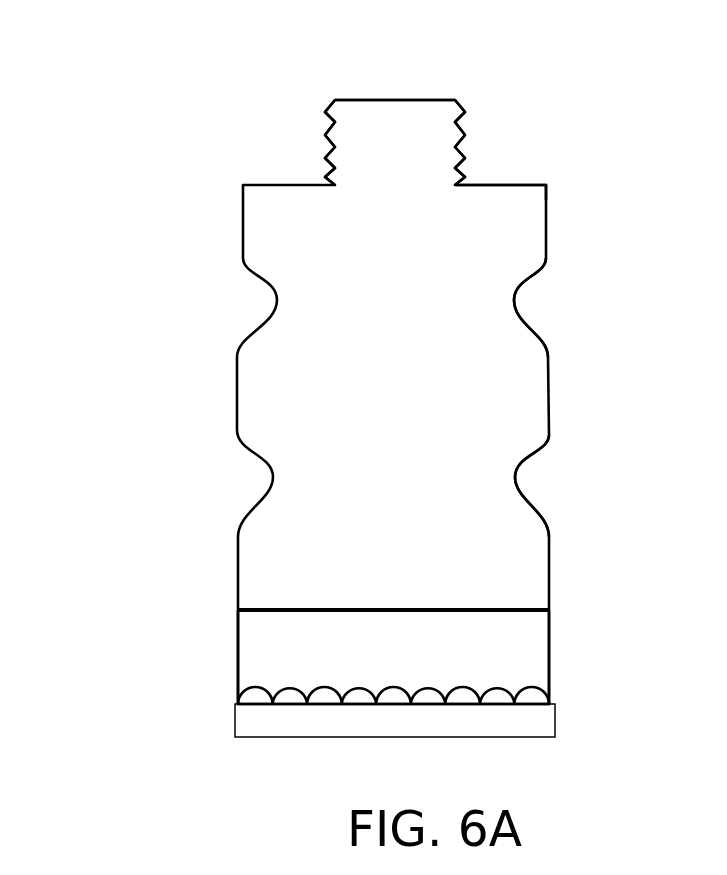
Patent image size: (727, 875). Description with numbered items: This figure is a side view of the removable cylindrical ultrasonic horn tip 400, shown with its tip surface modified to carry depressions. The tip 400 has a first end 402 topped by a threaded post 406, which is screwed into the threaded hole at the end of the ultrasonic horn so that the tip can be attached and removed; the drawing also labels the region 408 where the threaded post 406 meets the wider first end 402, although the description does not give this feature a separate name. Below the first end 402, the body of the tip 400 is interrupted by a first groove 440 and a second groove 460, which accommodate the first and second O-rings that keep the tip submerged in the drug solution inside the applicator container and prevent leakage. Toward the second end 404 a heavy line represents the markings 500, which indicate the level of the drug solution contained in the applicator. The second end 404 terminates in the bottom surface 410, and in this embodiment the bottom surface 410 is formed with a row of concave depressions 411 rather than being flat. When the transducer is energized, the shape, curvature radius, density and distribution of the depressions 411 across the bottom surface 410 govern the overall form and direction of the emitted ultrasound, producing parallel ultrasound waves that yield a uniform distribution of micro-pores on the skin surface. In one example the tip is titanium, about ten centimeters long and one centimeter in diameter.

The cylindrical tip 400 is at (351, 403).
The first end 402 is at (258, 220).
The second end 404 is at (252, 662).
The threaded post 406 is at (465, 135).
The shoulder 408 is at (548, 187).
The bottom surface 410 is at (275, 698).
The concave depressions 411 is at (430, 688).
The first groove 440 is at (528, 298).
The second groove 460 is at (537, 473).
The markings 500 is at (549, 610).